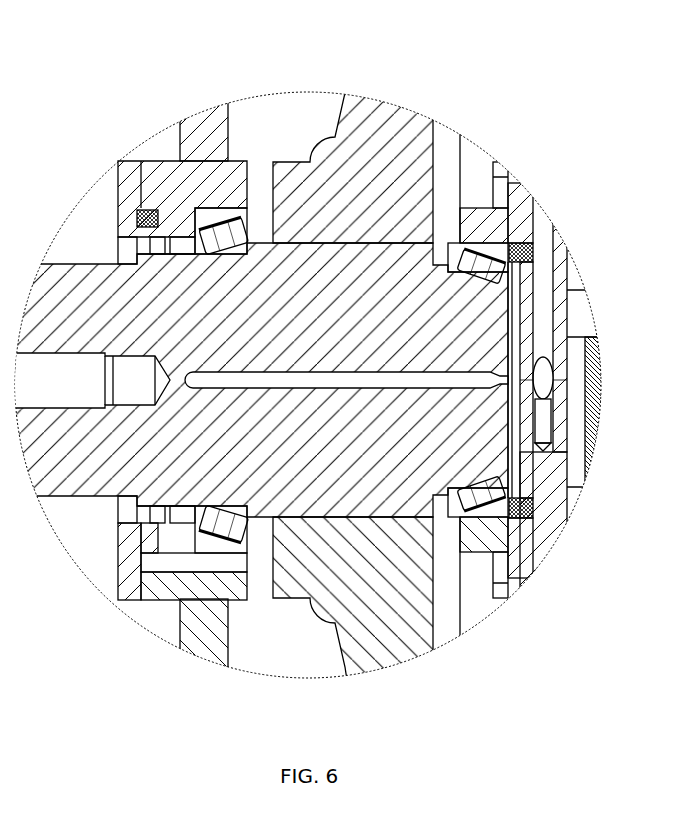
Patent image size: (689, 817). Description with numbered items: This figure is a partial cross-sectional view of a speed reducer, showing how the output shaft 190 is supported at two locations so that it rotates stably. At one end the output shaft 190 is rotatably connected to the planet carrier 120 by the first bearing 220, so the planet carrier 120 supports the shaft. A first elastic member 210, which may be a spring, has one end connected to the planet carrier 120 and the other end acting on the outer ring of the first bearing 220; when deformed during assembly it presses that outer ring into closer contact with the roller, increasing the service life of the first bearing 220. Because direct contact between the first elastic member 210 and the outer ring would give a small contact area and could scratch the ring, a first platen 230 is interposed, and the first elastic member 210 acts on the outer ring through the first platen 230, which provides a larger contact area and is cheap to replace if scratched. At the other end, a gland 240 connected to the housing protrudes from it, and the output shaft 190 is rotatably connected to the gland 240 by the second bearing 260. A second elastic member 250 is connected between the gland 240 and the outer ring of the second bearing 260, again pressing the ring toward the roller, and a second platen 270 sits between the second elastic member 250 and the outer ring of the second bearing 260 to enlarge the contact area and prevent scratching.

The planet carrier 120 is at (556, 500).
The output shaft 190 is at (75, 282).
The first elastic member 210 is at (521, 512).
The first bearing 220 is at (478, 500).
The first platen 230 is at (505, 540).
The gland 240 is at (127, 177).
The second elastic member 250 is at (152, 213).
The second bearing 260 is at (215, 213).
The second platen 270 is at (170, 215).